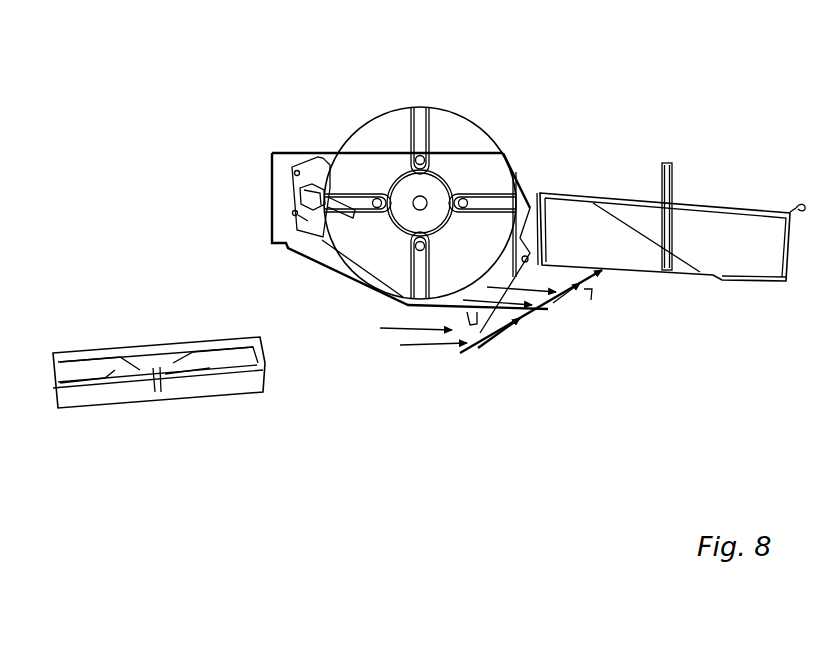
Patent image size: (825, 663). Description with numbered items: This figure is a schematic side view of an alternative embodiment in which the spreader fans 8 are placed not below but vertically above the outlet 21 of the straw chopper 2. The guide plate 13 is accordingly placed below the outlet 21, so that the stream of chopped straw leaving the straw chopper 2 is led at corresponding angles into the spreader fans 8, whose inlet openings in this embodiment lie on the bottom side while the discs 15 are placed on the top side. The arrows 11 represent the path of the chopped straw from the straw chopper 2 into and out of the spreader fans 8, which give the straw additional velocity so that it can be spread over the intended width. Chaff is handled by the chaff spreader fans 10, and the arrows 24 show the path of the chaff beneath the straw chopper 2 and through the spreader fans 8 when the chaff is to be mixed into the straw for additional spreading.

The straw chopper 2 is at (358, 137).
The spreader fans 8 is at (637, 178).
The chaff spreader fans 10 is at (170, 398).
The arrows 11 is at (590, 280).
The guide plate 13 is at (528, 332).
The disc 15 is at (695, 202).
The outlet opening 21 is at (518, 225).
The arrows 24 is at (400, 345).